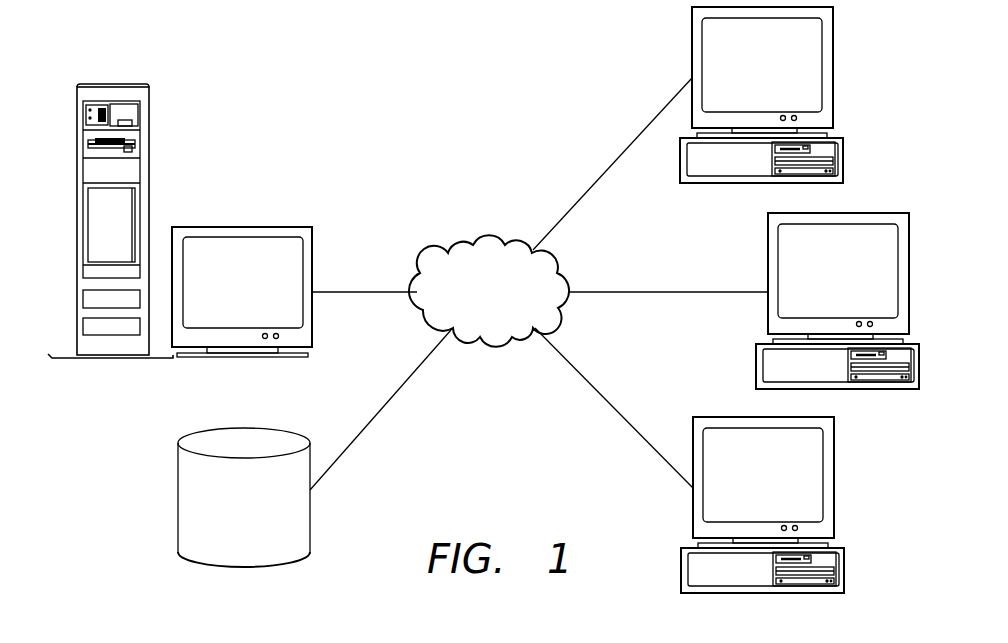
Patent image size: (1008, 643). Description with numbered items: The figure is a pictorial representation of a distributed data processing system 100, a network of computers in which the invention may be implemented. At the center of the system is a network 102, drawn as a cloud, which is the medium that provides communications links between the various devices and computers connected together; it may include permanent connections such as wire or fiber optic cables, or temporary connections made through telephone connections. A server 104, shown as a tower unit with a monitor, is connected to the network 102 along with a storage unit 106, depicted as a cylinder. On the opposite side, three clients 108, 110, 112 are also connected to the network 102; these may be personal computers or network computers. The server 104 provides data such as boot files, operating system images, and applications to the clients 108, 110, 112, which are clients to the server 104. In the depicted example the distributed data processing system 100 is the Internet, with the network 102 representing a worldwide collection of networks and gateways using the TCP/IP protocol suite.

The distributed data processing system 100 is at (384, 56).
The network 102 is at (473, 304).
The server 104 is at (223, 292).
The storage unit 106 is at (225, 518).
The client 108 is at (743, 79).
The client 110 is at (820, 282).
The client 112 is at (745, 487).